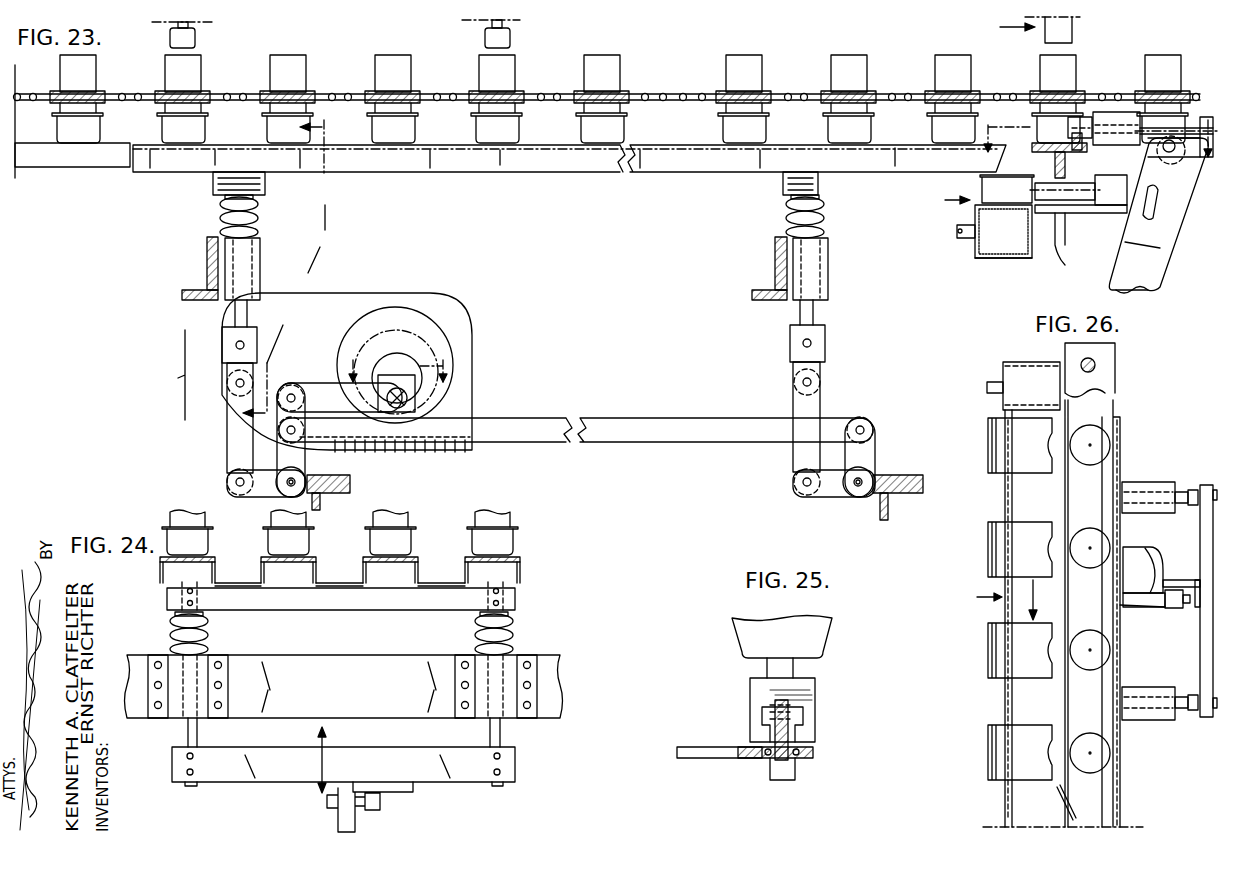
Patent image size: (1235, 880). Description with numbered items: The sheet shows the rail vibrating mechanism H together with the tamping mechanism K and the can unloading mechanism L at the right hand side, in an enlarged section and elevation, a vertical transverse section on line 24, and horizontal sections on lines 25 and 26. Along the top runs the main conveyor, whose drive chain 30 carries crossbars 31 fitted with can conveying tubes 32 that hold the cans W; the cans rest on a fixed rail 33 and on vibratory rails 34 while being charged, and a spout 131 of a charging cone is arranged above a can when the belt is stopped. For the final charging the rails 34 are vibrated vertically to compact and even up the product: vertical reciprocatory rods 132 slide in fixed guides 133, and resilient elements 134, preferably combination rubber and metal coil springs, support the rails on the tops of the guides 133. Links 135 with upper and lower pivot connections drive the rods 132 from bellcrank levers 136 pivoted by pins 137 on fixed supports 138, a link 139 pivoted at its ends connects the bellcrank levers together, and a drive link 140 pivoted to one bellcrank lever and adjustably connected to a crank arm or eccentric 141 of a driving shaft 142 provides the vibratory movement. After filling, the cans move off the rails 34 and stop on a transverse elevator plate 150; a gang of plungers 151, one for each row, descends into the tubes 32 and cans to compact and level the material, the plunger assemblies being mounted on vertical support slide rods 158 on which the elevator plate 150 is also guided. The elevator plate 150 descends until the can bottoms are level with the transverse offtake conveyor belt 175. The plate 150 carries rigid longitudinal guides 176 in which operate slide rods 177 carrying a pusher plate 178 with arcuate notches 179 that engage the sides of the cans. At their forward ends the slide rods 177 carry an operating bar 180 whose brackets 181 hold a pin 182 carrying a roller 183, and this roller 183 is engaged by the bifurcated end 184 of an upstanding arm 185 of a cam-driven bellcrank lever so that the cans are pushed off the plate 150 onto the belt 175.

In FIG. 23, the section line 24— 24 is at (300, 276).
In FIG. 23, the section line 25— 25 is at (397, 363).
In FIG. 23, the section line 26— 26 is at (1097, 129).
In FIG. 23, the drive chain 30 is at (684, 93).
In FIG. 23, the crossbar 31 is at (68, 91).
In FIG. 23, the can conveying tube 32 is at (167, 74).
In FIG. 24, the can conveying tube 32 is at (203, 526).
In FIG. 23, the fixed rail 33 is at (82, 162).
In FIG. 23, the vibratory rail 34 is at (688, 162).
In FIG. 24, the vibratory rail 34 is at (247, 563).
In FIG. 26, the vibratory rail 34 is at (998, 520).
In FIG. 23, the workpiece container W is at (167, 127).
In FIG. 24, the workpiece container W is at (170, 533).
In FIG. 26, the workpiece container W is at (1087, 465).
In FIG. 23, the rail vibrating mechanism H is at (168, 375).
In FIG. 23, the tamping mechanism K is at (1006, 29).
In FIG. 23, the can unloading mechanism L is at (978, 225).
In FIG. 26, the can unloading mechanism L is at (978, 599).
In FIG. 23, the spout 131 is at (198, 38).
In FIG. 23, the vertical reciprocatory rod 132 is at (233, 310).
In FIG. 24, the vertical reciprocatory rod 132 is at (188, 731).
In FIG. 23, the fixed guide 133 is at (260, 253).
In FIG. 24, the fixed guide 133 is at (175, 660).
In FIG. 23, the resilient element 134 is at (218, 212).
In FIG. 24, the resilient element 134 is at (172, 620).
In FIG. 23, the link 135 is at (227, 437).
In FIG. 24, the link 135 is at (342, 818).
In FIG. 23, the bellcrank lever 136 is at (272, 470).
In FIG. 23, the pin 137 is at (302, 481).
In FIG. 23, the fixed support 138 is at (353, 488).
In FIG. 23, the link 139 is at (580, 418).
In FIG. 23, the drive link 140 is at (313, 388).
In FIG. 25, the drive link 140 is at (722, 758).
In FIG. 23, the crank arm 141 is at (407, 398).
In FIG. 25, the crank arm 141 is at (795, 770).
In FIG. 23, the driving shaft 142 is at (407, 375).
In FIG. 25, the driving shaft 142 is at (793, 670).
In FIG. 23, the elevator plate 150 is at (1048, 152).
In FIG. 26, the elevator plate 150 is at (1110, 408).
In FIG. 23, the plunger 151 is at (1063, 32).
In FIG. 26, the support slide rod 158 is at (1095, 365).
In FIG. 23, the offtake conveyor belt 175 is at (1003, 258).
In FIG. 26, the offtake conveyor belt 175 is at (1030, 808).
In FIG. 23, the longitudinal guide 176 is at (1108, 112).
In FIG. 26, the longitudinal guide 176 is at (1147, 482).
In FIG. 26, the slide rod 177 is at (1187, 490).
In FIG. 23, the pusher plate 178 is at (1075, 138).
In FIG. 26, the pusher plate 178 is at (1115, 632).
In FIG. 26, the arcuate notch 179 is at (1102, 437).
In FIG. 23, the operating bar 180 is at (1193, 152).
In FIG. 26, the operating bar 180 is at (1213, 717).
In FIG. 26, the bracket 181 is at (1197, 583).
In FIG. 26, the pin 182 is at (1172, 610).
In FIG. 23, the roller 183 is at (1178, 173).
In FIG. 26, the roller 183 is at (1170, 603).
In FIG. 23, the bifurcated end 184 is at (1168, 210).
In FIG. 26, the bifurcated end 184 is at (1152, 560).
In FIG. 23, the upstanding arm 185 is at (1153, 267).
In FIG. 26, the upstanding arm 185 is at (1127, 550).